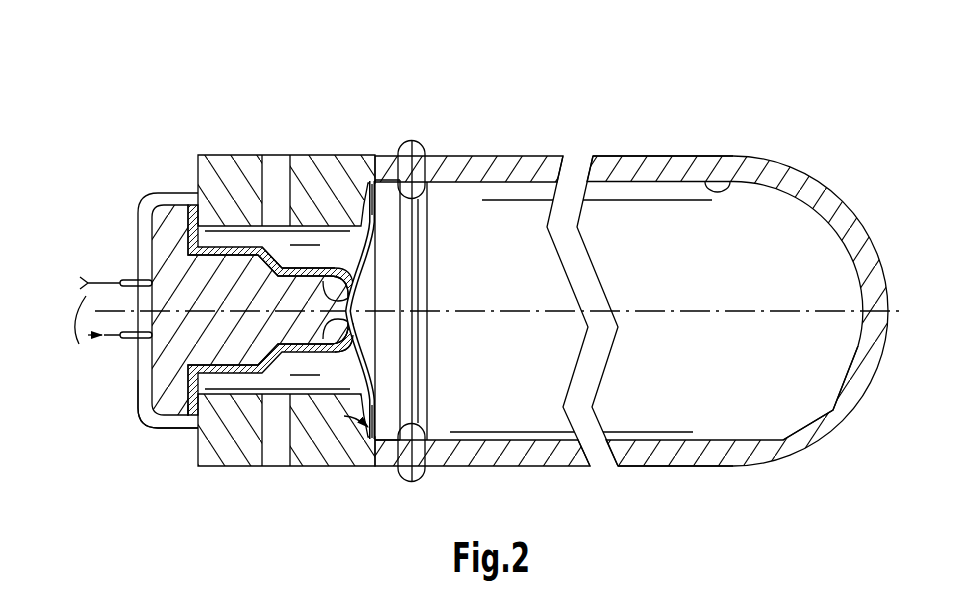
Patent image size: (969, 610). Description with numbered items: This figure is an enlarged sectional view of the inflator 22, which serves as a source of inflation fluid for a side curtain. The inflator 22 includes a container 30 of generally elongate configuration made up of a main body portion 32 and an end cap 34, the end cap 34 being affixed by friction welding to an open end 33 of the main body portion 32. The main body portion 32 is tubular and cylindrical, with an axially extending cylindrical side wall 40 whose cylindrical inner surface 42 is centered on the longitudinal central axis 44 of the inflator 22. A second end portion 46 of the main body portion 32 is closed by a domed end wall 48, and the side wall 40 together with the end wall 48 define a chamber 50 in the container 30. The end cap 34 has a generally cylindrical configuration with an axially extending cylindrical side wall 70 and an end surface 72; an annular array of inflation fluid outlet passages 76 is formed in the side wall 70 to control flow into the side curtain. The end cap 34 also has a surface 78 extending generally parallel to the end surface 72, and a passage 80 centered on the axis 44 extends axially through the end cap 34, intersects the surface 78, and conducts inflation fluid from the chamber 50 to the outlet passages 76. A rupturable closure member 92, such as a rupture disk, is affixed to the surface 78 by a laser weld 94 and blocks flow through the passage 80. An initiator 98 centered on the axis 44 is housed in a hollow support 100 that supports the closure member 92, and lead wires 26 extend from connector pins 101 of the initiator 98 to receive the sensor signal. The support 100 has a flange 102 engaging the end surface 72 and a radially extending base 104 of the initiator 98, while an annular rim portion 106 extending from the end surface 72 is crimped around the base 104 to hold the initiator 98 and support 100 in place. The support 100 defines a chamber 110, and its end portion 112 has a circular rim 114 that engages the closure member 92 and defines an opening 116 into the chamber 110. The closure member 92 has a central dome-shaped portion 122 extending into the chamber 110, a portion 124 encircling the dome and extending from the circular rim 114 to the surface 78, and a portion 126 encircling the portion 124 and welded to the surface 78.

The inflator 22 is at (587, 96).
The lead wires 26 is at (83, 334).
The container 30 is at (494, 152).
The main body portion 32 is at (652, 156).
The open end 33 is at (430, 152).
The end cap 34 is at (382, 155).
The cylindrical side wall 40 is at (683, 156).
The cylindrical inner surface 42 is at (726, 180).
The longitudinal central axis 44 is at (684, 300).
The second end portion 46 is at (727, 468).
The domed end wall 48 is at (853, 412).
The chamber 50 is at (752, 402).
The cylindrical side wall of end cap 70 is at (228, 155).
The end surface 72 is at (196, 180).
The inflation fluid outlet passages 76 is at (276, 205).
The surface 78 is at (376, 208).
The passage 80 is at (358, 242).
The rupturable closure member 92 is at (379, 377).
The laser weld 94 is at (369, 192).
The initiator 98 is at (172, 268).
The hollow support 100 is at (305, 362).
The connector pins 101 is at (132, 280).
The flange 102 is at (190, 412).
The base 104 is at (166, 392).
The annular rim portion 106 is at (158, 198).
The chamber 110 is at (342, 297).
The end portion 112 is at (313, 380).
The circular rim 114 is at (360, 343).
The opening 116 is at (352, 330).
The central dome-shaped portion 122 is at (334, 280).
The portion 124 is at (336, 428).
The portion 126 is at (358, 425).